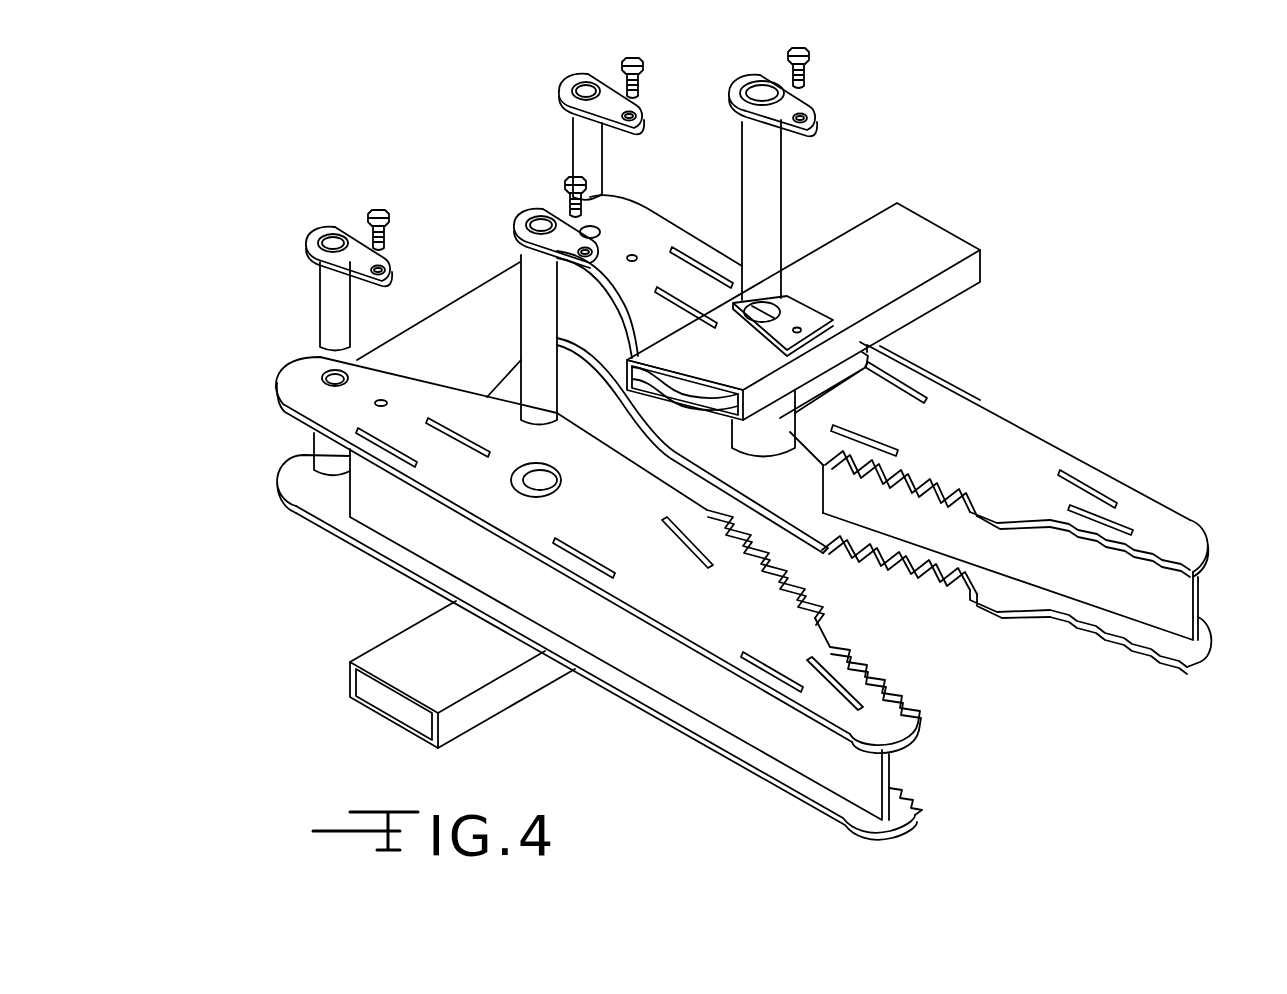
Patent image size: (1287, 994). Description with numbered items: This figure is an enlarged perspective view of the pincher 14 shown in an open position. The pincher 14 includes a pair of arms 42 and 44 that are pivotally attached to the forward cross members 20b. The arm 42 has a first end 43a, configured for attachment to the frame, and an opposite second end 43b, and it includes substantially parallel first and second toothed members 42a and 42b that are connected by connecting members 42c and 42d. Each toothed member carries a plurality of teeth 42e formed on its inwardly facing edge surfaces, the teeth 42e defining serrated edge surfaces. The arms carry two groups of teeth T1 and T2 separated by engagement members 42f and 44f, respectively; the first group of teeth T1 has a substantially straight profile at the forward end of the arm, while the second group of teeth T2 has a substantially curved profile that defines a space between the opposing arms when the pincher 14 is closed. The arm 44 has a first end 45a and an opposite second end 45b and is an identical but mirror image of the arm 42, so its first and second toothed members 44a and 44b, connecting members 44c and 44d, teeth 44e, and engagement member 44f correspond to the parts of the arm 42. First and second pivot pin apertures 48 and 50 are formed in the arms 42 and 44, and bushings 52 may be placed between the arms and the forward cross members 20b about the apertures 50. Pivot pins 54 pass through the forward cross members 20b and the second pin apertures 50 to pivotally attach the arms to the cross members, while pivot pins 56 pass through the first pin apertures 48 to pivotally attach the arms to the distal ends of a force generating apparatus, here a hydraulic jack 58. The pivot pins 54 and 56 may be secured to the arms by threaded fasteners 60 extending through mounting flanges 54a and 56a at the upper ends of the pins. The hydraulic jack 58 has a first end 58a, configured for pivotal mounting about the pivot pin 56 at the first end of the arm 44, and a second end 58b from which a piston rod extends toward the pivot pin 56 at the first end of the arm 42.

The pincher 14 is at (652, 198).
The forward cross members 20b is at (910, 228).
The arm 42 is at (932, 433).
The first toothed member 42a is at (1000, 417).
The second toothed member 42b is at (1200, 653).
The connecting member 42c is at (870, 506).
The connecting member 42d is at (1198, 607).
The teeth 42e is at (1130, 640).
The engagement member 42f is at (977, 510).
The first end 43a is at (608, 197).
The second end 43b is at (1207, 547).
The arm 44 is at (594, 600).
The first toothed member 44a is at (621, 528).
The second toothed member 44b is at (665, 728).
The connecting member 44c is at (889, 775).
The connecting member 44d is at (755, 726).
The teeth 44e is at (873, 673).
The engagement member 44f is at (817, 617).
The first end 45a is at (282, 390).
The second end 45b is at (907, 833).
The first pivot pin aperture 48 is at (330, 375).
The second pivot pin aperture 50 is at (516, 490).
The bushing 52 is at (832, 380).
The pivot pin 54 is at (768, 182).
The mounting flange 54a is at (758, 74).
The pivot pin 56 is at (327, 295).
The mounting flange 56a is at (353, 232).
The hydraulic jack 58 is at (592, 365).
The first end 58a is at (374, 352).
The second end 58b is at (598, 296).
The threaded fastener 60 is at (644, 84).
The first group of teeth T1 is at (1171, 683).
The second group of teeth T2 is at (963, 612).